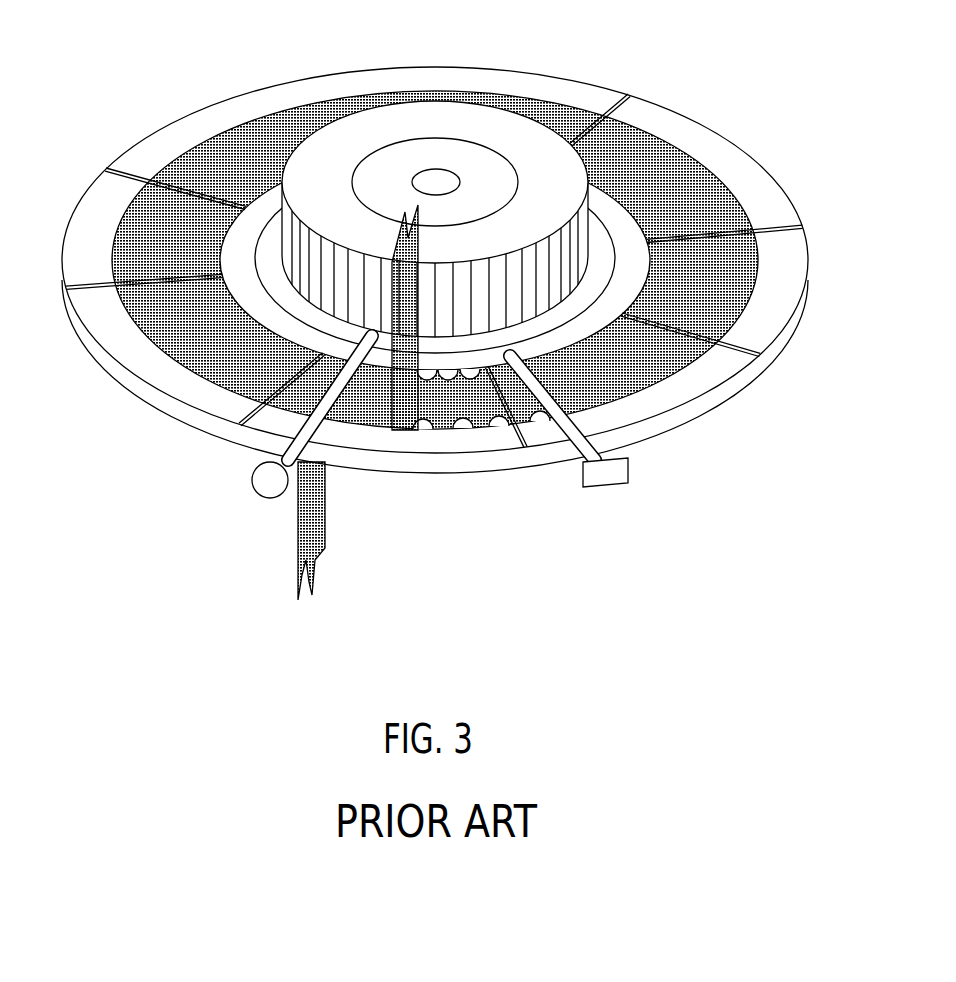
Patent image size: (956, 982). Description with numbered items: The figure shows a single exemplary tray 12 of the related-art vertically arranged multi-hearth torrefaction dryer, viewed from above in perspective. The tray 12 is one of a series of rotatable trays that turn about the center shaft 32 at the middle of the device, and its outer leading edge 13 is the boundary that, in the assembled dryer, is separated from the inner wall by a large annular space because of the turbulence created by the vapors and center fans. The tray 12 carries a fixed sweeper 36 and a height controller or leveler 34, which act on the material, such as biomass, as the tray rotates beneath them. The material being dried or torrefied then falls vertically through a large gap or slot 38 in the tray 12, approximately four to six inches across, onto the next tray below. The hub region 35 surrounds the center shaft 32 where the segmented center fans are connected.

The rotatable tray 12 is at (698, 380).
The leading edge 13 is at (780, 343).
The center shaft 32 is at (438, 182).
The height controller 34 is at (612, 473).
The hub 35 is at (582, 239).
The fixed sweeper 36 is at (268, 488).
The slot 38 is at (310, 427).